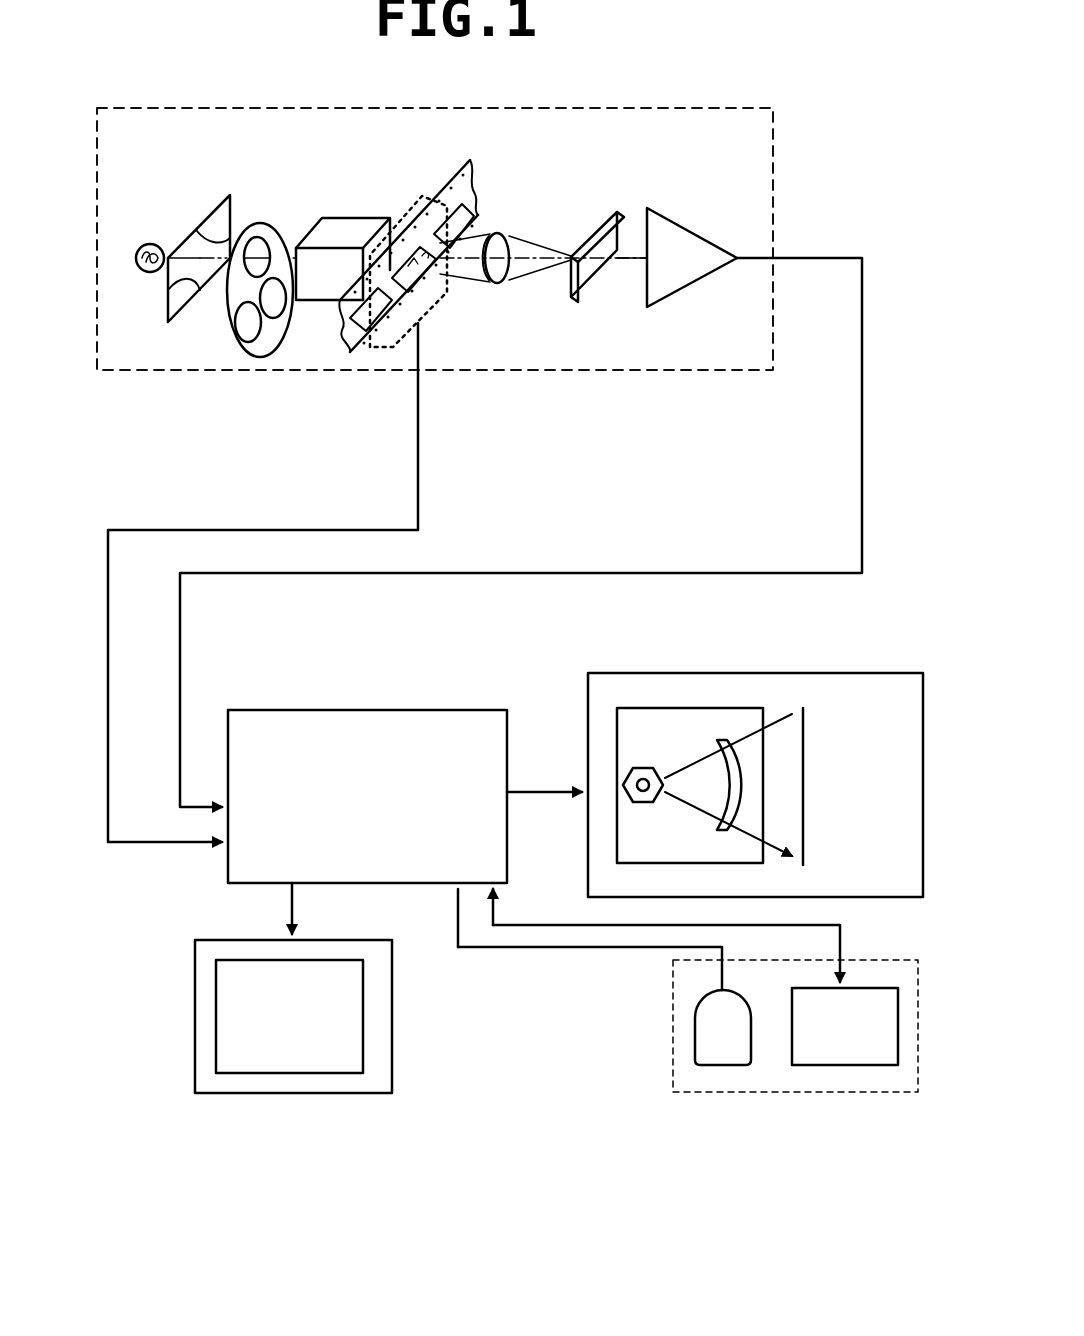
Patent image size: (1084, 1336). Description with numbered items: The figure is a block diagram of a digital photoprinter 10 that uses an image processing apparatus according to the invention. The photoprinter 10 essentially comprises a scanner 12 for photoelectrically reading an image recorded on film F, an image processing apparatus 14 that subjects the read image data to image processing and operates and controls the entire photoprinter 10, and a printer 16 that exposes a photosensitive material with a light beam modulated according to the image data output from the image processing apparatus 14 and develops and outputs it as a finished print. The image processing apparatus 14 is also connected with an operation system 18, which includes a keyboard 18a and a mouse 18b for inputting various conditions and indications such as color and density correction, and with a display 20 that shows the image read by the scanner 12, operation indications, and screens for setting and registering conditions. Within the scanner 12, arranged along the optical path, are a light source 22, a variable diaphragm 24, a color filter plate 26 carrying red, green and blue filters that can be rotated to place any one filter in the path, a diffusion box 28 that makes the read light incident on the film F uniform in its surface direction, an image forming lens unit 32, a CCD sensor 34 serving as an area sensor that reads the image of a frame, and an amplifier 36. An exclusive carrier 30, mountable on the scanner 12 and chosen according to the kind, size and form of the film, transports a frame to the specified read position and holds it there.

The digital photoprinter 10 is at (848, 124).
The scanner 12 is at (178, 372).
The image processing apparatus 14 is at (366, 708).
The printer 16 is at (750, 672).
The operation system 18 is at (778, 1095).
The keyboard 18a is at (848, 1065).
The mouse 18b is at (716, 1065).
The display 20 is at (286, 1095).
The light source 22 is at (150, 243).
The variable diaphragm 24 is at (205, 230).
The color filter plate 26 is at (262, 225).
The diffusion box 28 is at (340, 237).
The carrier 30 is at (432, 302).
The image forming lens unit 32 is at (497, 233).
The CCD sensor 34 is at (590, 232).
The amplifier 36 is at (693, 283).
The film F is at (464, 198).